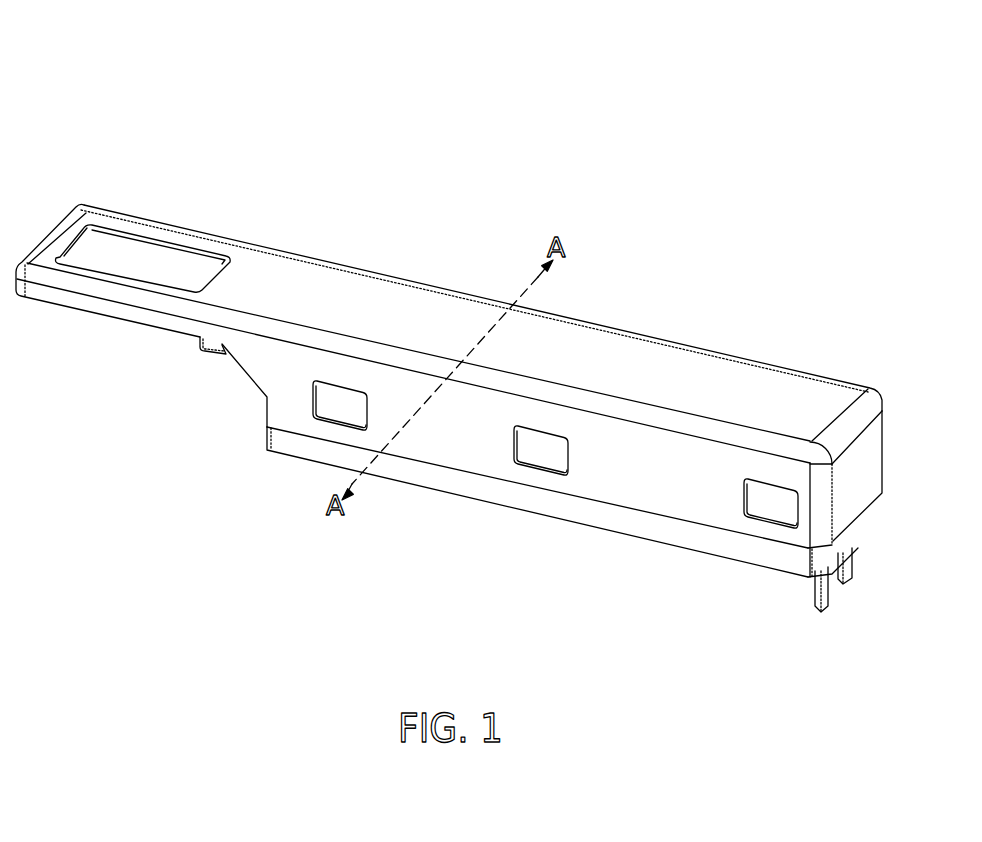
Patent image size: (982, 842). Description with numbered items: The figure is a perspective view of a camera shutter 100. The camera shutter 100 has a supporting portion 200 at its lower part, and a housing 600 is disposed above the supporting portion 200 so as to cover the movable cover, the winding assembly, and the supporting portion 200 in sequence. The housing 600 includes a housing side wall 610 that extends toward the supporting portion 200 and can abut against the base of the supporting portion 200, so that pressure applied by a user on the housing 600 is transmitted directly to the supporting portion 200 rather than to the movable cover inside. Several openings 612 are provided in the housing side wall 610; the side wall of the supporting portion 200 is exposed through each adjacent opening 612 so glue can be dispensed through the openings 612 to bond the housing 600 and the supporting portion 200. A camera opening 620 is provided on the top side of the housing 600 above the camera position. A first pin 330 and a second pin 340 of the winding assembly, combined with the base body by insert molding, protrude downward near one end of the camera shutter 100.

The camera shutter 100 is at (450, 353).
The supporting portion 200 is at (611, 523).
The first pin 330 is at (818, 588).
The second pin 340 is at (848, 572).
The housing 600 is at (449, 361).
The housing side wall 610 is at (491, 454).
The opening 612 is at (332, 406).
The camera opening 620 is at (136, 255).